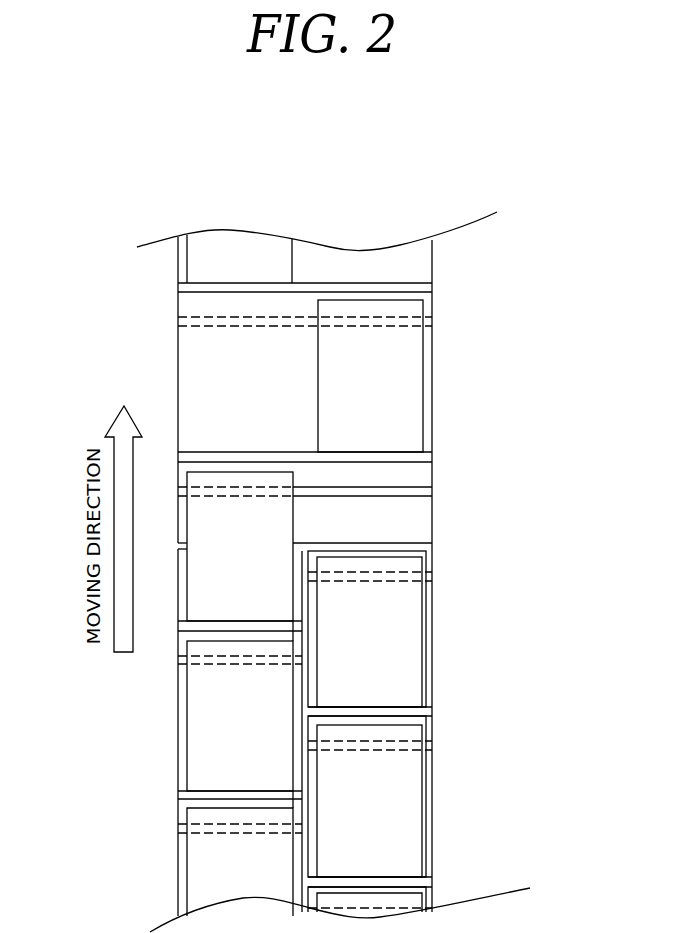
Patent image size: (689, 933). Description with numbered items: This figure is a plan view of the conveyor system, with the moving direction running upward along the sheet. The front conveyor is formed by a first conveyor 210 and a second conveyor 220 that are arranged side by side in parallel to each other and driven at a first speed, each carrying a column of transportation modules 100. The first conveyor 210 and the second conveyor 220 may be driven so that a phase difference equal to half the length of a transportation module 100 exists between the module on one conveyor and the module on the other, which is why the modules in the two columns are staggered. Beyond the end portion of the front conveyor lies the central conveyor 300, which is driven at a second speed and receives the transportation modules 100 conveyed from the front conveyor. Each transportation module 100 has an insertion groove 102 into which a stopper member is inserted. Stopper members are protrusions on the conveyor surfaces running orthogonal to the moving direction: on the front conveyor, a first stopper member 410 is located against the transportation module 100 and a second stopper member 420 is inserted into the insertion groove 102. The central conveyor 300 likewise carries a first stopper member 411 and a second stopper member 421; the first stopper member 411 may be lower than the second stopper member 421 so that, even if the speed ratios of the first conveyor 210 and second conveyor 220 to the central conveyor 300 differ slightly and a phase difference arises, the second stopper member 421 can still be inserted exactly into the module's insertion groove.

The transportation module 100 is at (403, 642).
The insertion groove 102 is at (407, 576).
The first conveyor 210 is at (178, 777).
The second conveyor 220 is at (432, 787).
The central conveyor 300 is at (150, 363).
The first stopper member 410 is at (432, 882).
The first stopper member 411 is at (425, 452).
The second stopper member 420 is at (432, 745).
The second stopper member 421 is at (432, 320).